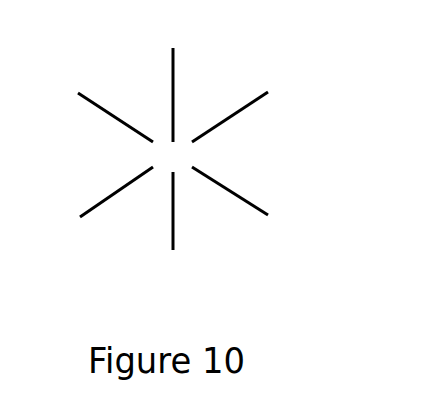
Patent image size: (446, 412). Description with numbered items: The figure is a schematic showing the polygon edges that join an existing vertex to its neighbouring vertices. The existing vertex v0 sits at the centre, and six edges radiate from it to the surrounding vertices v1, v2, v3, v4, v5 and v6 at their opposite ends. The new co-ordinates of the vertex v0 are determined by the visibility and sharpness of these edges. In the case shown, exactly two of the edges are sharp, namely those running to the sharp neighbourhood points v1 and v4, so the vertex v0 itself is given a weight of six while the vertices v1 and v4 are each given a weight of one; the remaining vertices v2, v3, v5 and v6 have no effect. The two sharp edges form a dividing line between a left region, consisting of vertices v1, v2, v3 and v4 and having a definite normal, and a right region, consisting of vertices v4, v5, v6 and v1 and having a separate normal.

The existing vertex v0 is at (170, 155).
The sharp neighbourhood vertex v1 is at (169, 85).
The neighbourhood vertex v2 is at (100, 114).
The neighbourhood vertex v3 is at (101, 197).
The sharp neighbourhood vertex v4 is at (171, 221).
The neighbourhood vertex v5 is at (244, 200).
The neighbourhood vertex v6 is at (241, 113).